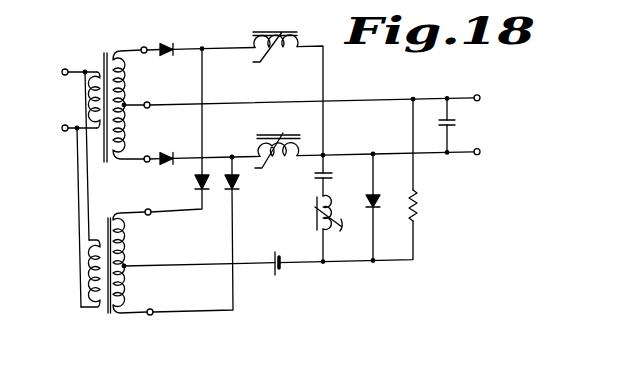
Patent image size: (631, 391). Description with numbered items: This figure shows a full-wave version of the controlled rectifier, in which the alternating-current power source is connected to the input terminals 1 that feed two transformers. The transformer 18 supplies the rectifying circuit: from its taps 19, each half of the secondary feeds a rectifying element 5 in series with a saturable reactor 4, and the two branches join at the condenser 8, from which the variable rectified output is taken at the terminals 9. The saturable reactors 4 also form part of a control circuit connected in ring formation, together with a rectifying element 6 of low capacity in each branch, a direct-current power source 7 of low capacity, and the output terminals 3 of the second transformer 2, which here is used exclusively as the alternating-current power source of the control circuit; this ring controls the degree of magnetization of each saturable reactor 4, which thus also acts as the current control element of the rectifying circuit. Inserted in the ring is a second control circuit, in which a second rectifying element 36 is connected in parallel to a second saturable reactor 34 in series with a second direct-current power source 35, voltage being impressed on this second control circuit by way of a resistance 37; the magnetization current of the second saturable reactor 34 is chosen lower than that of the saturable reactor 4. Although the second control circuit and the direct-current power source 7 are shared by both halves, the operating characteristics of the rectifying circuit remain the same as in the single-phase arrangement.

The input terminals 1 is at (61, 72).
The transformer 18 is at (108, 52).
The transformer 2 is at (112, 213).
The secondary winding taps 19 is at (152, 46).
The rectifying element 5 is at (178, 46).
The saturable reactor 4 is at (273, 33).
The rectifying element of low capacity 6 is at (207, 192).
The output terminals of transformer 3 is at (152, 209).
The direct-current power source of low capacity 7 is at (279, 268).
The second direct-current power source 35 is at (313, 174).
The second saturable reactor 34 is at (340, 201).
The second rectifying element 36 is at (385, 200).
The resistance 37 is at (418, 201).
The condenser 8 is at (458, 125).
The terminals 9 is at (481, 98).